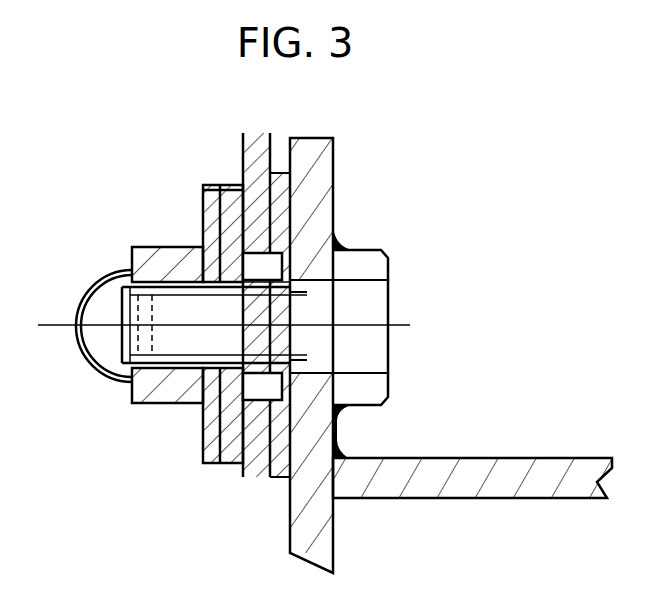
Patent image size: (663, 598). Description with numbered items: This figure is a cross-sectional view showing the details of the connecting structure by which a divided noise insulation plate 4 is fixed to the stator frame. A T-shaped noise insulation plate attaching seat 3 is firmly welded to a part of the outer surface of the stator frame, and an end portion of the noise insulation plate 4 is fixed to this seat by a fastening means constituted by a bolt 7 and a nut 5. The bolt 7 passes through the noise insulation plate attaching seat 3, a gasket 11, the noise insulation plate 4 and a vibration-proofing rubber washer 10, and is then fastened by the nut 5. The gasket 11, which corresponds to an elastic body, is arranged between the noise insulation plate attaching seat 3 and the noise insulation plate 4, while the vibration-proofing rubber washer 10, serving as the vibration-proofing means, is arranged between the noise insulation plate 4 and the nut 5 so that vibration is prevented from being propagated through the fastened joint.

The noise insulation plate attaching seat 3 is at (307, 220).
The noise insulation plate 4 is at (258, 152).
The nut 5 is at (155, 248).
The bolt 7 is at (353, 307).
The vibration-proofing rubber washer 10 is at (233, 408).
The gasket 11 is at (247, 465).